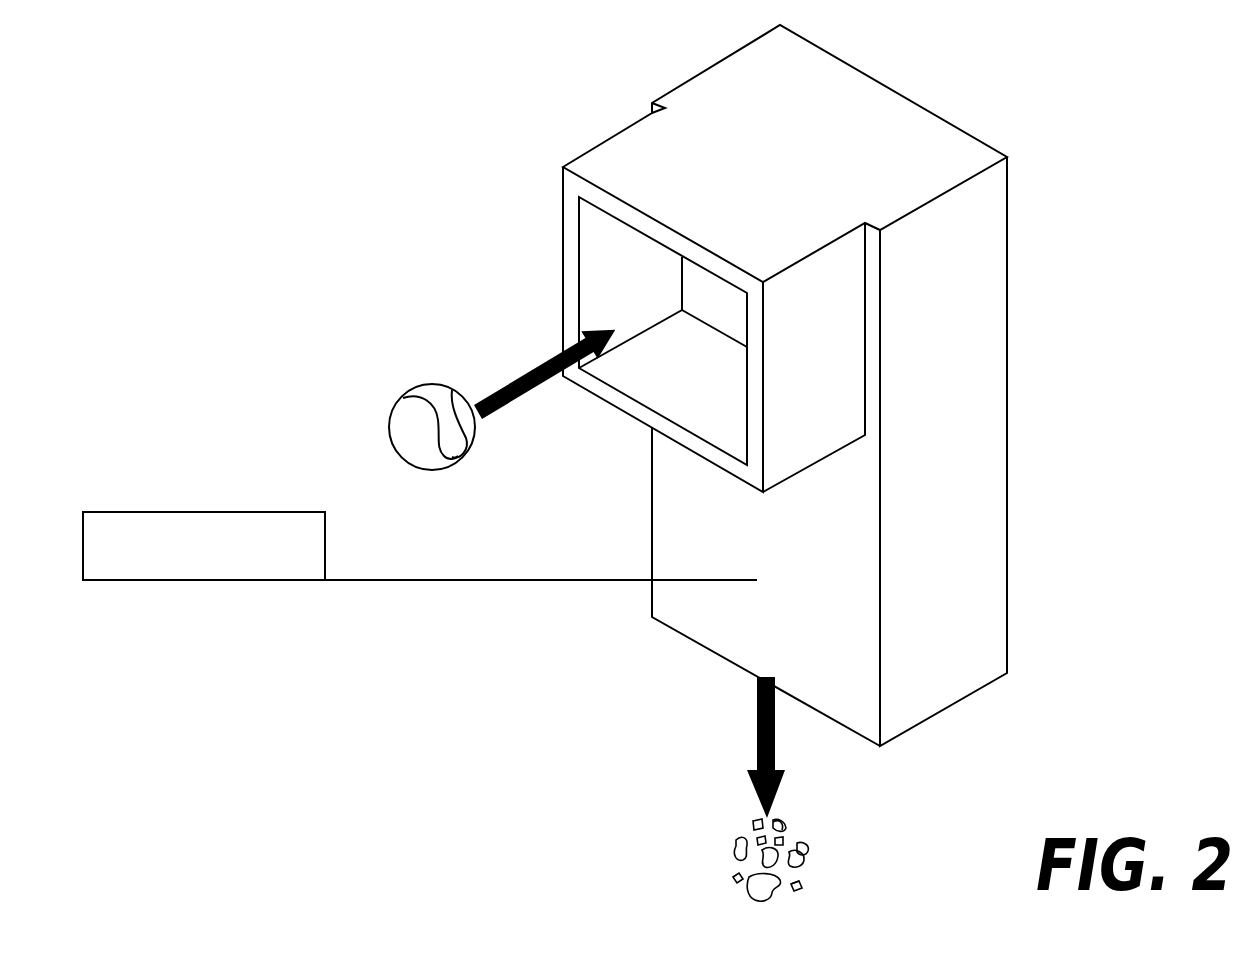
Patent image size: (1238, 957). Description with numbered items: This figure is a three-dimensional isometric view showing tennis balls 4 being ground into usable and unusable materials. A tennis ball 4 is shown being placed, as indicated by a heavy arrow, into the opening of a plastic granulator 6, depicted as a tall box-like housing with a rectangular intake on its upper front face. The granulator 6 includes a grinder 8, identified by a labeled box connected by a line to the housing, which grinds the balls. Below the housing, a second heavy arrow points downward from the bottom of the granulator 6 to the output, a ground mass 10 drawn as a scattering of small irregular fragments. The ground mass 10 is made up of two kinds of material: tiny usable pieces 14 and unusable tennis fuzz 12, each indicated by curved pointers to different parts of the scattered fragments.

The tennis balls 4 is at (403, 420).
The plastic granulator 6 is at (532, 175).
The grinder 8 is at (420, 546).
The ground mass 10 is at (688, 828).
The unusable tennis fuzz 12 is at (742, 845).
The tiny usable pieces 14 is at (780, 840).